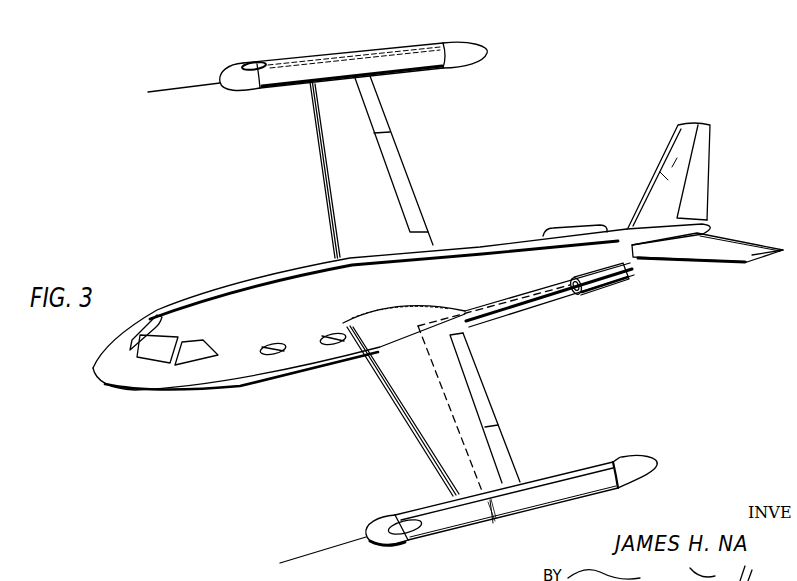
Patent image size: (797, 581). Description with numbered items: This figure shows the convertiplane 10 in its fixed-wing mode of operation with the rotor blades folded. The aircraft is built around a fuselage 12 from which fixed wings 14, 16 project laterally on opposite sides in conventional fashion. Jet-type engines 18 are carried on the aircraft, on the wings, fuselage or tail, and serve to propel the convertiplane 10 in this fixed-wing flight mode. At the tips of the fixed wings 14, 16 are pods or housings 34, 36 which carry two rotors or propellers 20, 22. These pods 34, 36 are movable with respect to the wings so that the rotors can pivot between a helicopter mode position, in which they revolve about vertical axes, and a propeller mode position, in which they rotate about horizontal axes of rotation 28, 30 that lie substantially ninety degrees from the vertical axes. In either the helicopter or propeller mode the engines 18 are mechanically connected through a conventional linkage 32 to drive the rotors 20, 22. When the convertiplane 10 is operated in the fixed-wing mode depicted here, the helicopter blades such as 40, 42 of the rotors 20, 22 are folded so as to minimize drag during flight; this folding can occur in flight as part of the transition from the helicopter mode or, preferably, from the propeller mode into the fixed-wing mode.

The convertiplane 10 is at (178, 243).
The fuselage 12 is at (285, 273).
The fixed wing 14 is at (330, 161).
The fixed wing 16 is at (393, 398).
The jet-type engine 18 is at (580, 227).
The rotor or propeller 20 is at (385, 499).
The rotor or propeller 22 is at (261, 55).
The horizontal axis of rotation 28 is at (326, 549).
The horizontal axis of rotation 30 is at (194, 88).
The linkage 32 is at (457, 398).
The pod or housing 34 is at (425, 541).
The pod or housing 36 is at (300, 37).
The helicopter blade 40 is at (567, 490).
The helicopter blade 42 is at (414, 47).